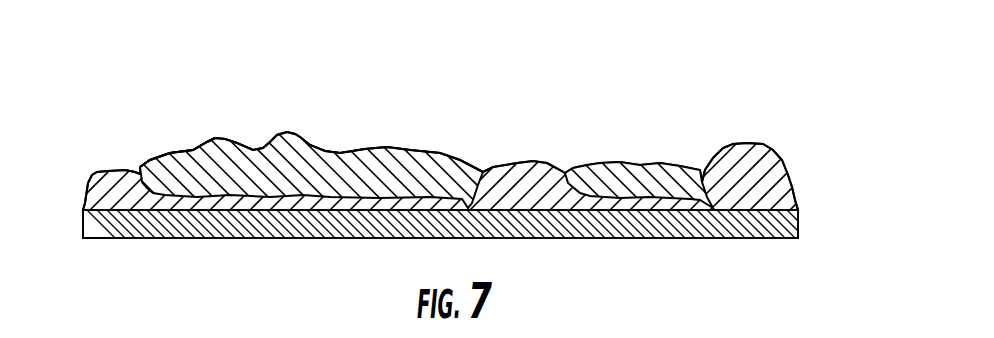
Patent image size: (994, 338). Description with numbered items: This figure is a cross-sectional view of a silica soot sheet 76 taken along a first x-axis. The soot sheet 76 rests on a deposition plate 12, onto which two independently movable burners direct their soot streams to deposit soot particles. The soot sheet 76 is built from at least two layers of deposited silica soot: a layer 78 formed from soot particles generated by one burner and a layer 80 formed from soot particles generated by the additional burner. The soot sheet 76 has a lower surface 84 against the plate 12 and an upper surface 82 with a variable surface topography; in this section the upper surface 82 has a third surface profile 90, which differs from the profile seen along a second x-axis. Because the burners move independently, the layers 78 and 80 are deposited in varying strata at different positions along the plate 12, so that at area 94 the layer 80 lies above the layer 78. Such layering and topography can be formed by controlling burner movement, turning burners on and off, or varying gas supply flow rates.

The plate 12 is at (798, 215).
The soot sheet 76 is at (782, 117).
The layer 78 is at (776, 177).
The layer 80 is at (292, 152).
The upper surface 82 is at (570, 95).
The lower surface 84 is at (730, 224).
The third surface profile 90 is at (442, 148).
The area 94 is at (189, 97).